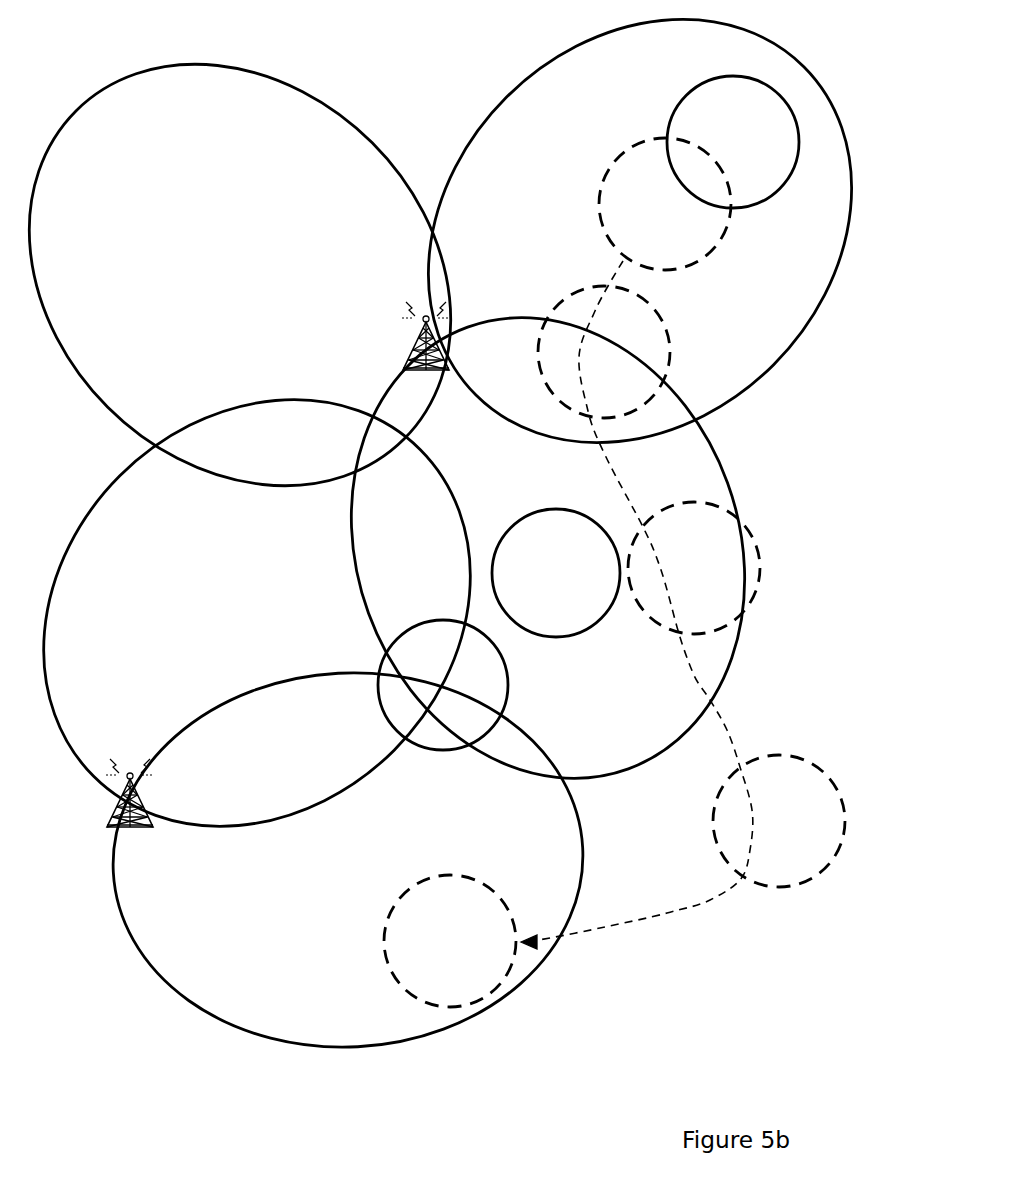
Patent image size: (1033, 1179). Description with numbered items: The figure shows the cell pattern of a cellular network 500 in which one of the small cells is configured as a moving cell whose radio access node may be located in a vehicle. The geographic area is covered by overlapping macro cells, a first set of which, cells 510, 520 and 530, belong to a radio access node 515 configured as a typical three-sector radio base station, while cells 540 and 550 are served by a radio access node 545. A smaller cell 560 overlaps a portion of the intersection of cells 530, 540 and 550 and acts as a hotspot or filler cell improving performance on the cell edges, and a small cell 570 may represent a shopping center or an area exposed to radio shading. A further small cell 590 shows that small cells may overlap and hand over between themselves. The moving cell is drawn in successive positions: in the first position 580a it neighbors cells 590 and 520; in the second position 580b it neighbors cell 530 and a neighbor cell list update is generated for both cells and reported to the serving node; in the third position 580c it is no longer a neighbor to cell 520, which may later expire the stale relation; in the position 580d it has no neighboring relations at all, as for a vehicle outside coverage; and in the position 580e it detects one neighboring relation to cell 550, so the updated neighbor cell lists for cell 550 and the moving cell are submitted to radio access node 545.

The cellular network 500 is at (430, 70).
The macro cell 510 is at (268, 285).
The radio access node 515 is at (412, 352).
The macro cell 520 is at (639, 264).
The macro cell 530 is at (548, 548).
The macro cell 540 is at (279, 612).
The radio access node 545 is at (118, 812).
The macro cell 550 is at (348, 860).
The hotspot or filler cell 560 is at (463, 685).
The small cell 570 is at (556, 573).
The small cell 590 is at (733, 142).
The moving cell in first position 580a is at (665, 204).
The moving cell in second position 580b is at (604, 352).
The moving cell in third position 580c is at (694, 568).
The moving cell in fourth position 580d is at (779, 821).
The moving cell in fifth position 580e is at (450, 941).